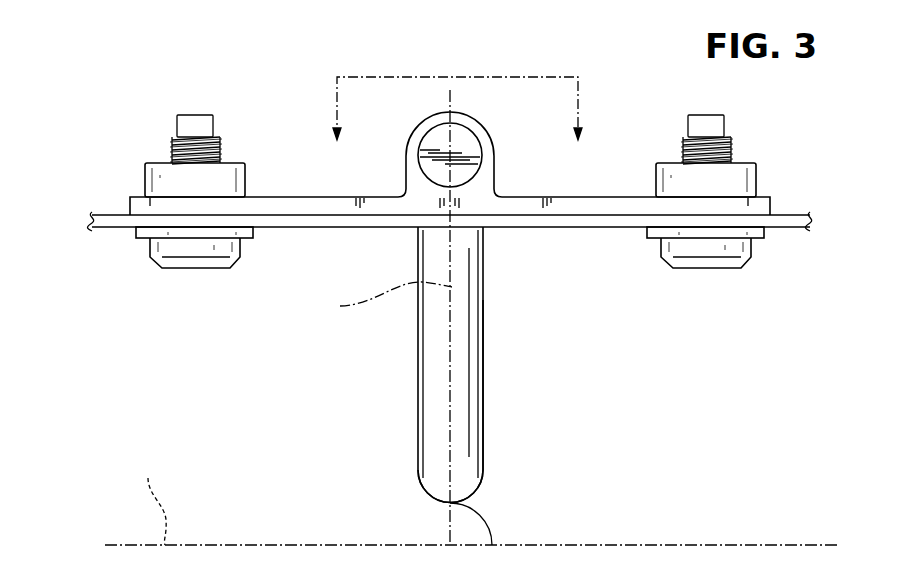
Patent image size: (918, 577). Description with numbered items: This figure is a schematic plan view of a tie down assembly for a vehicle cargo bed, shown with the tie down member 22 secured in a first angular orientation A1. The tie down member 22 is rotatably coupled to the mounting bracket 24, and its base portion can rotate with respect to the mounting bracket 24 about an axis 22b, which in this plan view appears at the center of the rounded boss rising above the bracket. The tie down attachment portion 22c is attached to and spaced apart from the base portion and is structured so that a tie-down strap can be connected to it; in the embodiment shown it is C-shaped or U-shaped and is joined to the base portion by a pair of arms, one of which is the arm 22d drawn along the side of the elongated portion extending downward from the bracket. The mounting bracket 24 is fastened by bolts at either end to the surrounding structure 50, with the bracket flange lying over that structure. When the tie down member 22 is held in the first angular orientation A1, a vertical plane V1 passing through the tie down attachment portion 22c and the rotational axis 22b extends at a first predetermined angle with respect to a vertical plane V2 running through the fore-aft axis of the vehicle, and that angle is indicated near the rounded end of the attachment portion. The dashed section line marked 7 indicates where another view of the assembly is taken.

The tie down member 22 is at (418, 388).
The axis 22b is at (453, 153).
The tie down attachment portion 22c is at (433, 490).
The arm 22d is at (483, 395).
The mounting bracket 24 is at (538, 197).
The mounting plate 50 is at (788, 228).
The section line 7- 7 is at (459, 111).
The first angular orientation A1 is at (415, 317).
The vertical plane V1 is at (382, 298).
The vertical plane V2 is at (471, 502).